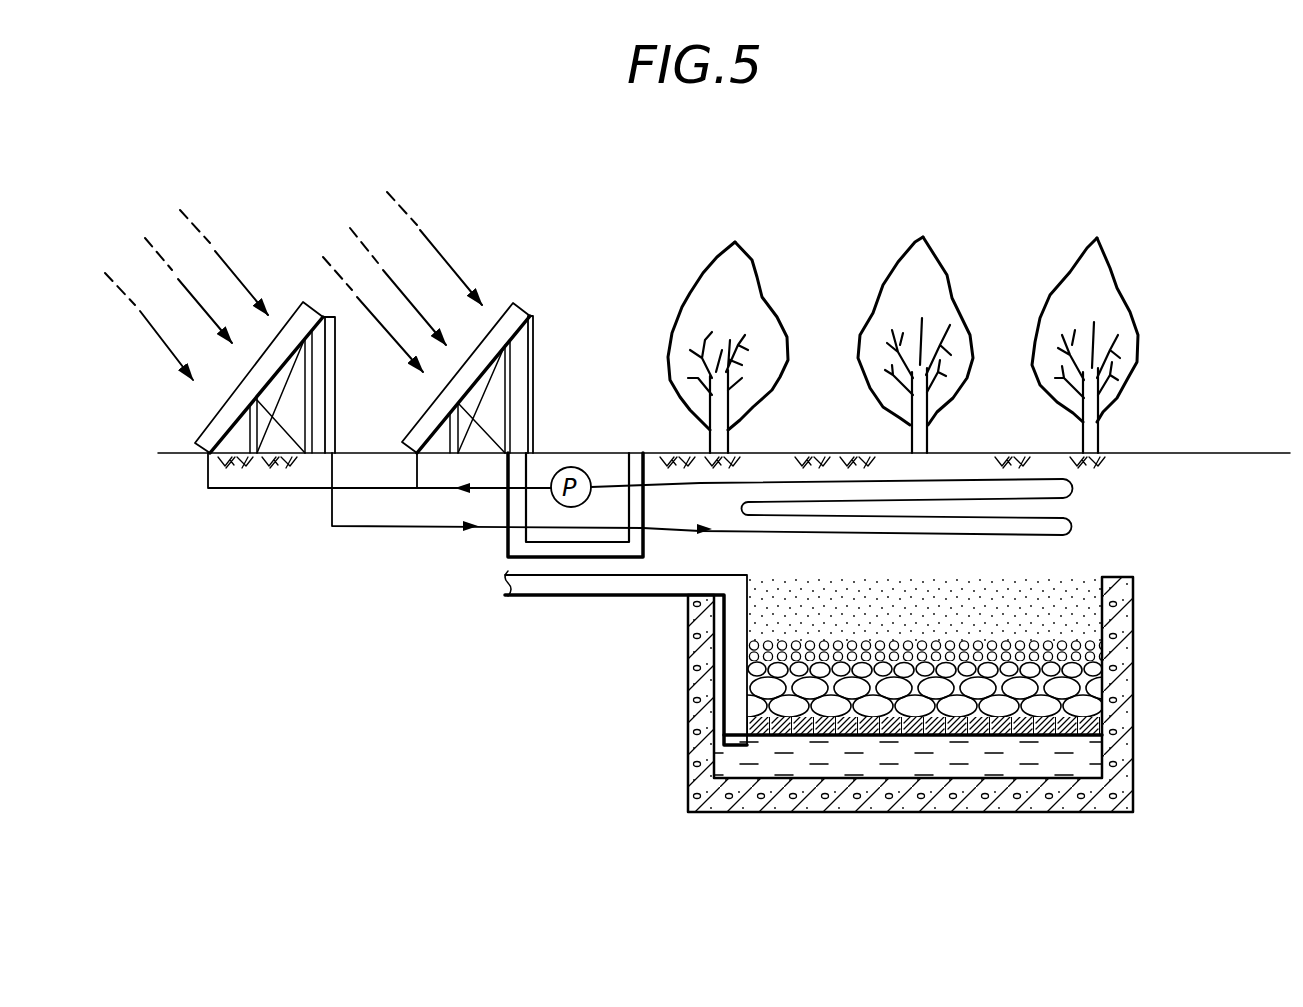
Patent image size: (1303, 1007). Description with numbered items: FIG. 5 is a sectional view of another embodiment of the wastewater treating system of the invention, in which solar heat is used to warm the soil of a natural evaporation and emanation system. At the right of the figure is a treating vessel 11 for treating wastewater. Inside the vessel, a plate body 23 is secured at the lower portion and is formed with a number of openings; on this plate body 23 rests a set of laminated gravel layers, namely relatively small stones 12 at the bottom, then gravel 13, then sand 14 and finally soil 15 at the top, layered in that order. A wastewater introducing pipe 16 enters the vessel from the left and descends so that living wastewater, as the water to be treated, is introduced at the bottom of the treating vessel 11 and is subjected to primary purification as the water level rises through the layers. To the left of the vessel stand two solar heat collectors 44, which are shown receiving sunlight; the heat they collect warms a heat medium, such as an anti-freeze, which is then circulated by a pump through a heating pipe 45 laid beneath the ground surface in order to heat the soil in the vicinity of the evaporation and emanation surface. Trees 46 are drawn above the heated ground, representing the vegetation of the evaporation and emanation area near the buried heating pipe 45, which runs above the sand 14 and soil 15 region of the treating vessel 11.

The solar heat collector 44 is at (292, 338).
The trees 46 is at (950, 327).
The heat exchange pipe 45 is at (958, 478).
The soil 15 is at (1093, 512).
The sand 14 is at (1060, 598).
The gravel 13 is at (1058, 640).
The treating vessel 11 is at (1102, 682).
The relatively small stones 12 is at (1075, 703).
The wastewater introducing pipe 16 is at (600, 585).
The plate body 23 is at (800, 735).